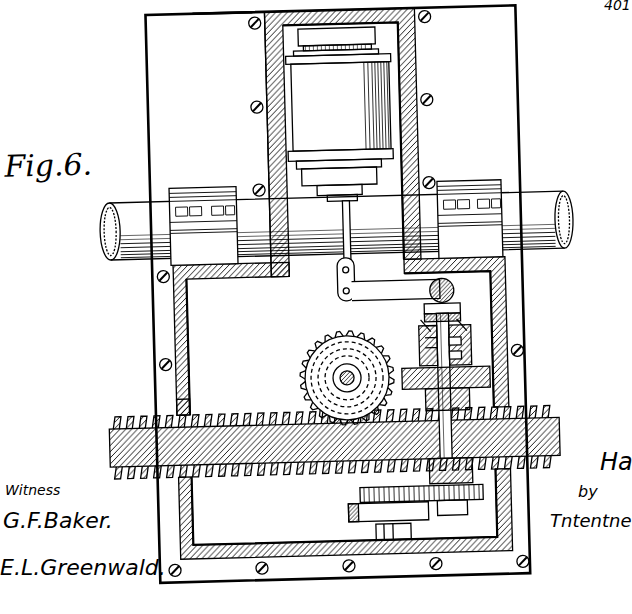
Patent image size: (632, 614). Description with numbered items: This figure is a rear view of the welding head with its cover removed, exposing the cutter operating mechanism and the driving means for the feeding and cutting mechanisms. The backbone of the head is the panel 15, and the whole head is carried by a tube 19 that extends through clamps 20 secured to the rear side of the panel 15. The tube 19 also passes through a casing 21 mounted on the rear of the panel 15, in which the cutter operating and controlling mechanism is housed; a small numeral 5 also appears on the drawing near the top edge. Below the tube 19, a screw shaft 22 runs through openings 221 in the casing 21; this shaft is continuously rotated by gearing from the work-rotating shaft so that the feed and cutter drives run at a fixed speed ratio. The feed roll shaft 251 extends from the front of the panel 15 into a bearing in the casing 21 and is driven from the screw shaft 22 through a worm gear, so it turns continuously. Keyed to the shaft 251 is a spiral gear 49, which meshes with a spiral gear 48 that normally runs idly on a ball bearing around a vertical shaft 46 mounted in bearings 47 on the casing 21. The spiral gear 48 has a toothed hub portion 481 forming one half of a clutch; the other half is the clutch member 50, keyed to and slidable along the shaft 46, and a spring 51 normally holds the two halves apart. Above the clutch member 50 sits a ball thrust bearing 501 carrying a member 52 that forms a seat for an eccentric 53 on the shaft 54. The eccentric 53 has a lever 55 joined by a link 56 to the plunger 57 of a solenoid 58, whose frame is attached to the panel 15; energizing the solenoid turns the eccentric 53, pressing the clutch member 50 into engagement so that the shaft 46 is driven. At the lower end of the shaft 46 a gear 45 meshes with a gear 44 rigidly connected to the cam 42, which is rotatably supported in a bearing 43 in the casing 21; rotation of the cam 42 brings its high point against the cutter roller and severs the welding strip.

The plate 5 is at (202, 8).
The panel 15 is at (505, 76).
The tube 19 is at (567, 199).
The clamps 20 is at (193, 193).
The casing 21 is at (176, 312).
The screw shaft 22 is at (558, 424).
The openings 221 is at (190, 414).
The shaft 251 is at (338, 378).
The cam 42 is at (343, 514).
The bearing 43 is at (390, 543).
The gear 44 is at (355, 495).
The gear 45 is at (478, 494).
The vertical shaft 46 is at (462, 332).
The bearings 47 is at (470, 477).
The spiral gear 48 is at (488, 381).
The hub portion 481 is at (462, 352).
The spiral gear 49 is at (318, 345).
The clutch member 50 is at (418, 345).
The ball thrust bearing 501 is at (462, 321).
The spring 51 is at (462, 341).
The member 52 is at (424, 322).
The eccentric 53 is at (458, 311).
The shaft 54 is at (445, 282).
The lever 55 is at (368, 291).
The link 56 is at (339, 283).
The plunger 57 is at (352, 232).
The solenoid 58 is at (300, 93).